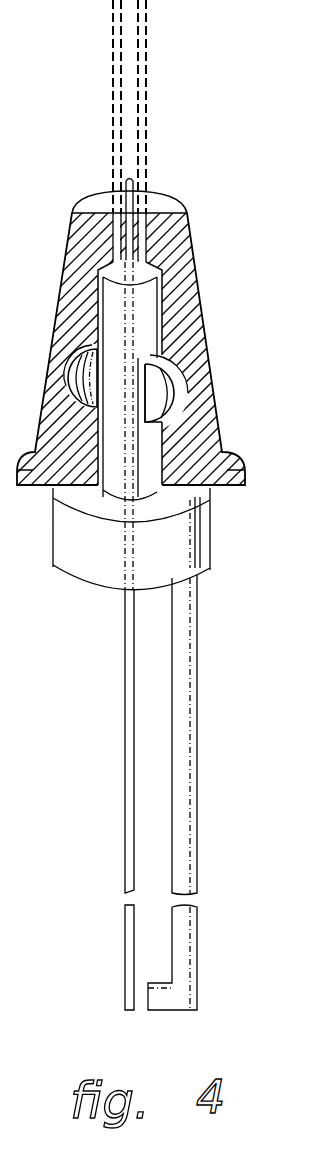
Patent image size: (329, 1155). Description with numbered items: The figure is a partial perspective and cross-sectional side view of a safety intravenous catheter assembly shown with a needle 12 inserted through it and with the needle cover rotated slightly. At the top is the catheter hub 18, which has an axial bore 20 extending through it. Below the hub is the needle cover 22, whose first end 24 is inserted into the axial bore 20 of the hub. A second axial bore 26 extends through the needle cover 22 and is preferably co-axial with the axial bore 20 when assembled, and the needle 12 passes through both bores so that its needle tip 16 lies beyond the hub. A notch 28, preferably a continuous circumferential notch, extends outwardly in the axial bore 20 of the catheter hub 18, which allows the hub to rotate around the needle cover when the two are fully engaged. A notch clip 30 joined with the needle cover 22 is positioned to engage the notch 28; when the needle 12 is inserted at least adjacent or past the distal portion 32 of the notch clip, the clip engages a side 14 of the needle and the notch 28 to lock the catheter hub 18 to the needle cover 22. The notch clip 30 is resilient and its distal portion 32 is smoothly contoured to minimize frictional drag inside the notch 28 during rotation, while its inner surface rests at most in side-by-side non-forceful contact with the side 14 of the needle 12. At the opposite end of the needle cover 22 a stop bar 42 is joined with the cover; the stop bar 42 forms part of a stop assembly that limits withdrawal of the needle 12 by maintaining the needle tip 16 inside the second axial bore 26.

The needle 12 is at (125, 743).
The side of the needle 14 is at (122, 318).
The needle tip 16 is at (136, 192).
The catheter hub 18 is at (193, 253).
The axial bore 20 is at (147, 88).
The needle cover 22 is at (107, 494).
The first end of the needle cover 24 is at (128, 300).
The second axial bore 26 is at (125, 562).
The notch 28 is at (70, 362).
The notch clip 30 is at (152, 494).
The distal portion of the notch clip 32 is at (165, 382).
The stop bar 42 is at (197, 720).